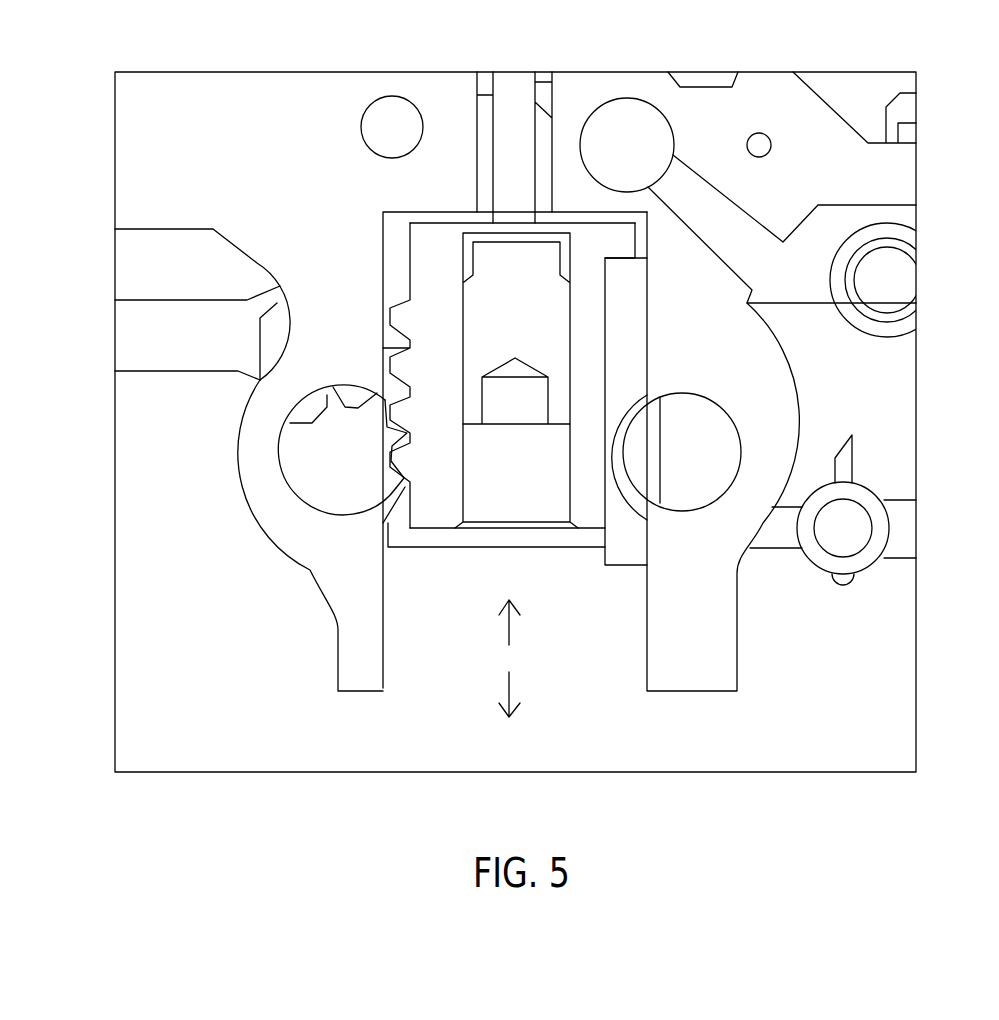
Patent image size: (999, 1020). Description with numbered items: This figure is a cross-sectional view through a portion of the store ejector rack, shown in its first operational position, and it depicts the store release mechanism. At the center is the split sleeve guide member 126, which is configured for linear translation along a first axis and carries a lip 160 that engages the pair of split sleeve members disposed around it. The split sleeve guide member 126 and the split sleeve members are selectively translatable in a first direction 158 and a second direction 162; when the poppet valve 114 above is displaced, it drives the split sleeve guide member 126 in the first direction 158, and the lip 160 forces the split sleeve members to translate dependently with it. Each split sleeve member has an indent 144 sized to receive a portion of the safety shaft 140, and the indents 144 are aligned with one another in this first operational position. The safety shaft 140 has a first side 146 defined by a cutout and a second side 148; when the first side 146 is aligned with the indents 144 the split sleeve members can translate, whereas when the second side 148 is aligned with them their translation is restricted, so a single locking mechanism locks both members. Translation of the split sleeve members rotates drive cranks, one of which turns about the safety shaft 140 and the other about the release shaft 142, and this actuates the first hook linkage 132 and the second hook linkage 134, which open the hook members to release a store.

The poppet valve 114 is at (483, 93).
The split sleeve guide member 126 is at (427, 240).
The lip 160 is at (622, 238).
The indent 144 is at (638, 397).
The safety shaft 140 is at (697, 422).
The second side 148 is at (750, 437).
The first side 146 is at (648, 473).
The second hook linkage 134 is at (162, 385).
The release shaft 142 is at (327, 483).
The first hook linkage 132 is at (895, 565).
The second direction 162 is at (509, 628).
The first direction 158 is at (509, 688).